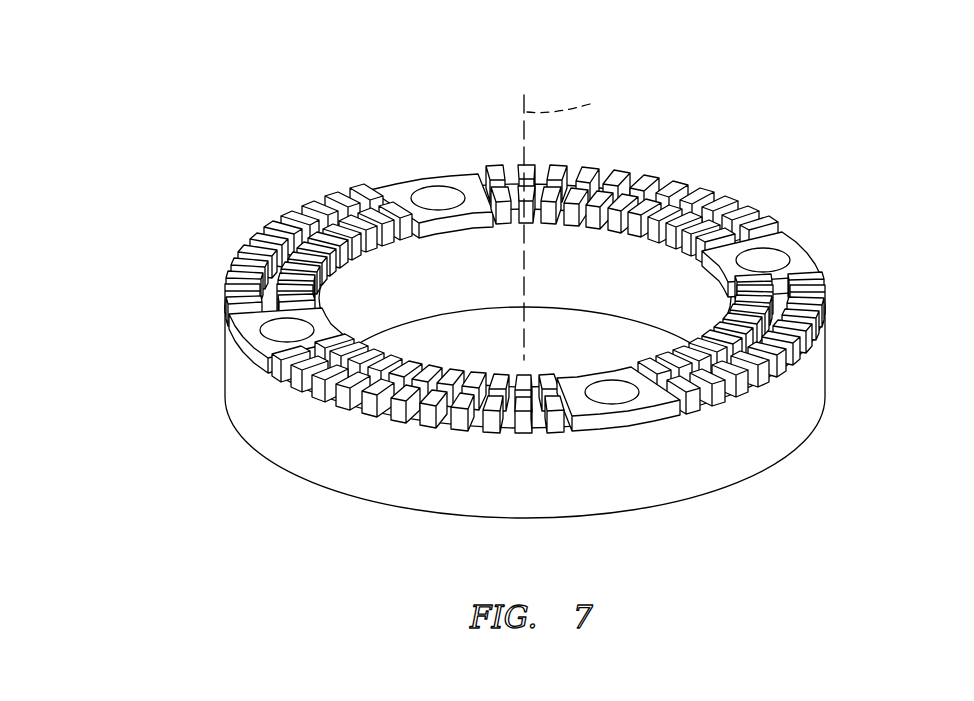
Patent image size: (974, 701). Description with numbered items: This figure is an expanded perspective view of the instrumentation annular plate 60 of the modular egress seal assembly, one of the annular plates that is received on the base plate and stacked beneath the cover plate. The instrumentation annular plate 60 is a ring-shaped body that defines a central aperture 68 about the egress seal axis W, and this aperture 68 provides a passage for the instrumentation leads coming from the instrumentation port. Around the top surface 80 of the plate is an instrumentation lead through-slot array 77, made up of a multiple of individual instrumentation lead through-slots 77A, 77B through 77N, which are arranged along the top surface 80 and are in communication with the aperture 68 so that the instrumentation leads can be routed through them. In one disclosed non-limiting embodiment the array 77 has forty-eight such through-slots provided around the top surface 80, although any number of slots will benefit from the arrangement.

The instrumentation annular plate 60 is at (532, 271).
The aperture 68 is at (584, 349).
The instrumentation lead through-slot array 77 is at (491, 291).
The instrumentation lead through-slot 77A is at (228, 312).
The instrumentation lead through-slot 77B is at (228, 297).
The instrumentation lead through-slot 77N is at (266, 358).
The top surface 80 is at (806, 262).